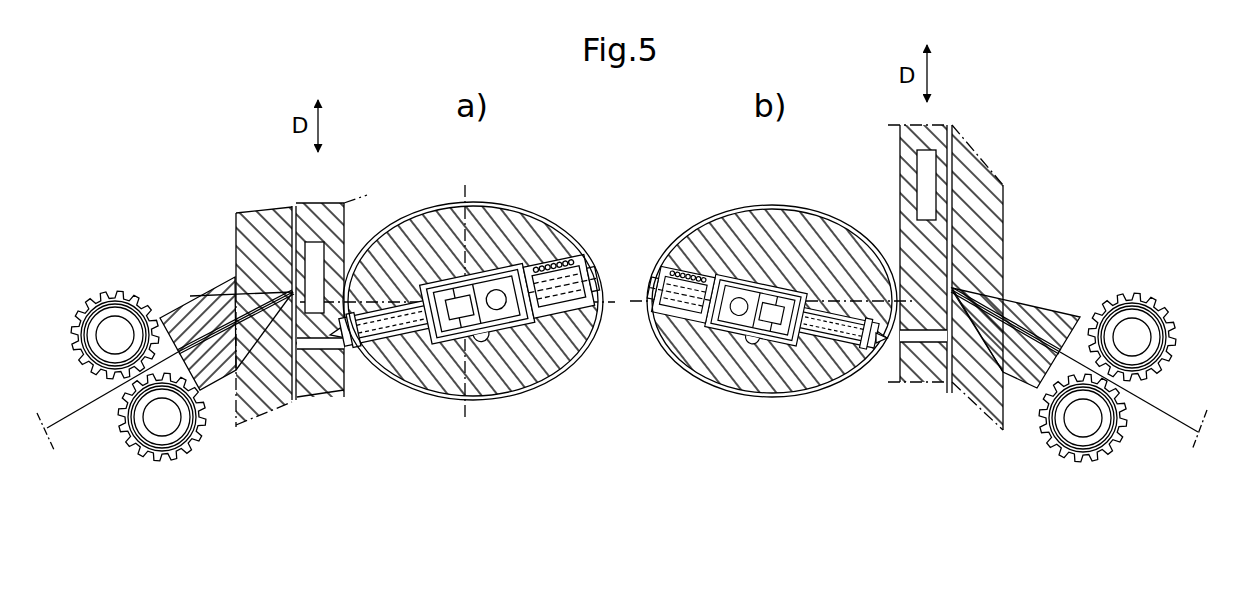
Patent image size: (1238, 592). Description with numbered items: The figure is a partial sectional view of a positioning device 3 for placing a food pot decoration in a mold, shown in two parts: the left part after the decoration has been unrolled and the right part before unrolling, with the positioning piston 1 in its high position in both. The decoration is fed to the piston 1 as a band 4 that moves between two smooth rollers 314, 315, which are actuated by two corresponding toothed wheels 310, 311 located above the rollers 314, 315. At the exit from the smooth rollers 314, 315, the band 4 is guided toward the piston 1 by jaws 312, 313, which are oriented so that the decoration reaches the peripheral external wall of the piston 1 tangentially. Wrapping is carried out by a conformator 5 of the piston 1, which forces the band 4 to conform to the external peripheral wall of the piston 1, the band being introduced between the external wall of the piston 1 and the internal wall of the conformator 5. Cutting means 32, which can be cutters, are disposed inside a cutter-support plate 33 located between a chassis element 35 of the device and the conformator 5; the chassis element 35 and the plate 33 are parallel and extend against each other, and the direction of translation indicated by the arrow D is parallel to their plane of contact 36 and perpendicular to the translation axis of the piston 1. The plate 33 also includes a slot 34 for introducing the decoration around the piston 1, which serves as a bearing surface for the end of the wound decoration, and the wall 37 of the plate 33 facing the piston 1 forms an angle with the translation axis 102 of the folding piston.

The piston 1 is at (488, 221).
The positioning device 3 is at (390, 479).
The band 4 is at (572, 250).
The conformator 5 is at (568, 375).
The means for cutting the decoration 32 is at (315, 271).
The cutter-support plate 33 is at (320, 203).
The slot 34 is at (318, 351).
The chassis element 35 is at (1007, 248).
The plane of contact 36 is at (288, 230).
The wall of the plate 37 is at (346, 216).
The translation axis 102 is at (892, 346).
The toothed wheel 310 is at (88, 298).
The toothed wheel 311 is at (140, 462).
The jaw 312 is at (187, 294).
The jaw 313 is at (257, 351).
The smooth roller 314 is at (1106, 463).
The smooth roller 315 is at (1170, 302).